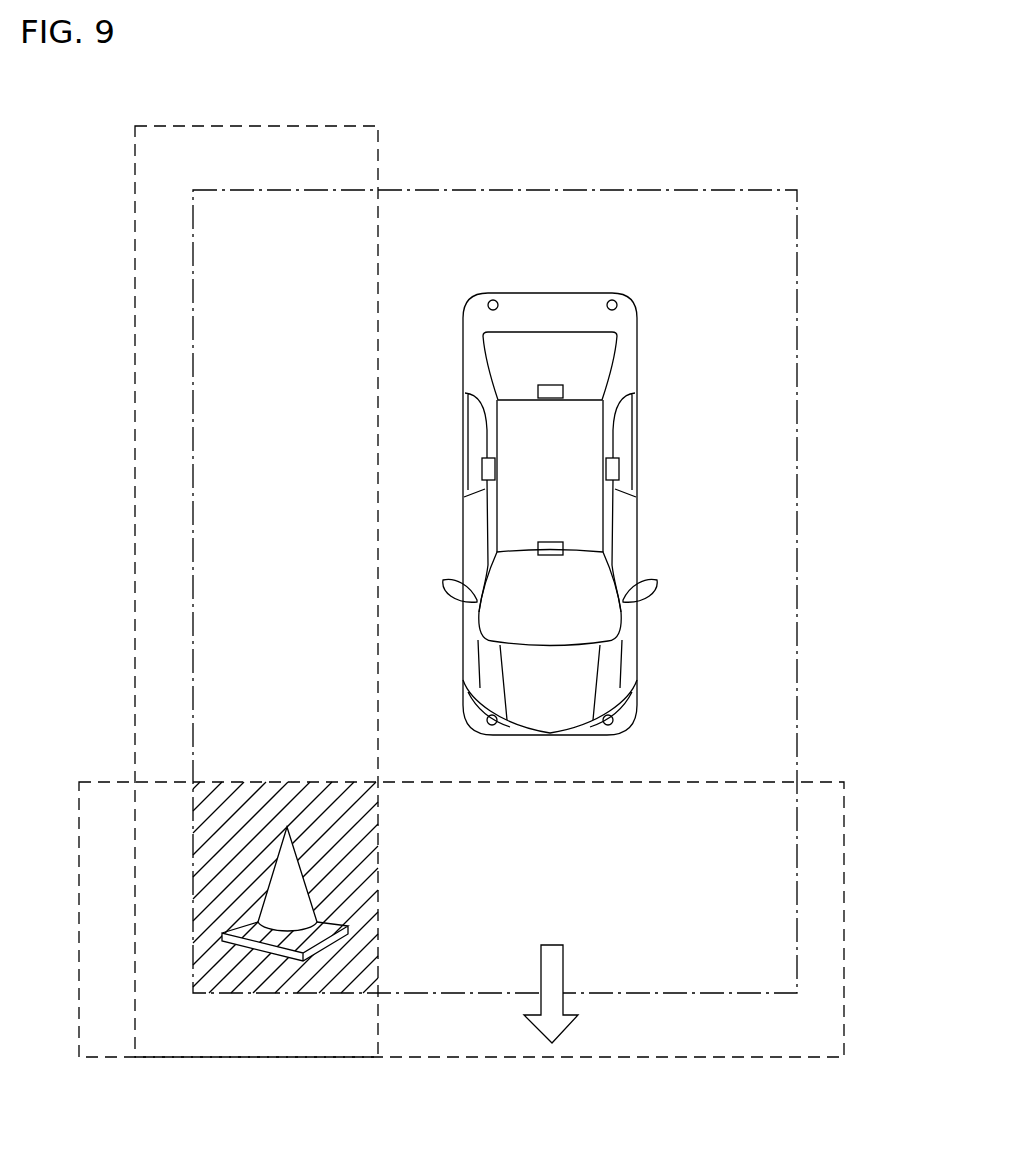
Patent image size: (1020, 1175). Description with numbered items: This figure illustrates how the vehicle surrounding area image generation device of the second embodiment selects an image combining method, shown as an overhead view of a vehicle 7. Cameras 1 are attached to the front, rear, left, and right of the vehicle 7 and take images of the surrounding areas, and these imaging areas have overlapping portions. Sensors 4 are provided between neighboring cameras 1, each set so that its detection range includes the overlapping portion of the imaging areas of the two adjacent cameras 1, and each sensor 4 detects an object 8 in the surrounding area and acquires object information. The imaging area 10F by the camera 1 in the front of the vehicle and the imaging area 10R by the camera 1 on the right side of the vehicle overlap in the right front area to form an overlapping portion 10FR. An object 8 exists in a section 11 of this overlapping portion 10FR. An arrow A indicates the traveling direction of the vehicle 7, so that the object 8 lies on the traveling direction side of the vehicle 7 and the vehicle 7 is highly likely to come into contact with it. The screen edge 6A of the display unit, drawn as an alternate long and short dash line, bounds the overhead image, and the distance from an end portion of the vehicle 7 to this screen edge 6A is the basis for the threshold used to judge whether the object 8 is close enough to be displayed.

The camera 1 is at (553, 385).
The sensor 4 is at (489, 309).
The screen edge 6A is at (798, 258).
The vehicle 7 is at (638, 530).
The object 8 is at (193, 887).
The imaging area 10R is at (134, 333).
The imaging area 10F is at (845, 855).
The overlapping portion 10FR is at (172, 853).
The section 11 is at (193, 967).
The arrow A is at (564, 969).